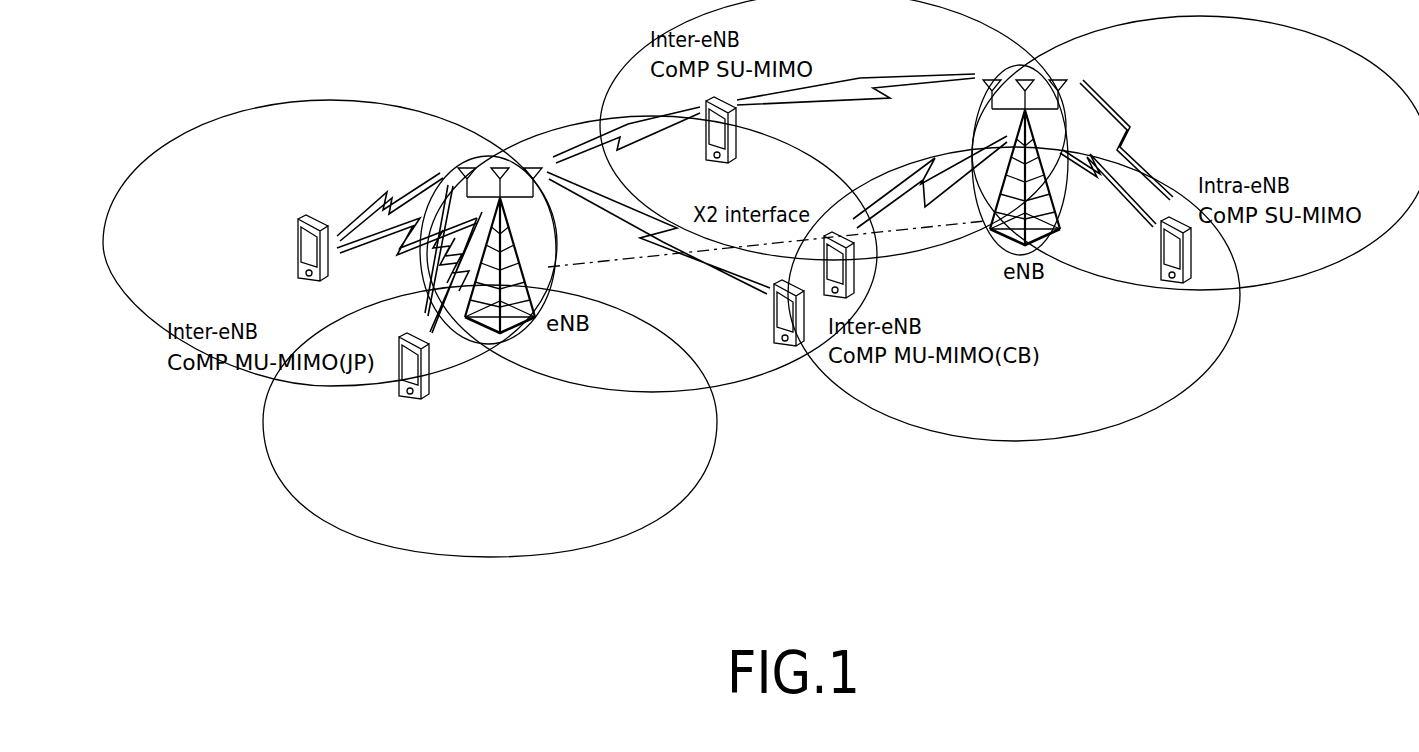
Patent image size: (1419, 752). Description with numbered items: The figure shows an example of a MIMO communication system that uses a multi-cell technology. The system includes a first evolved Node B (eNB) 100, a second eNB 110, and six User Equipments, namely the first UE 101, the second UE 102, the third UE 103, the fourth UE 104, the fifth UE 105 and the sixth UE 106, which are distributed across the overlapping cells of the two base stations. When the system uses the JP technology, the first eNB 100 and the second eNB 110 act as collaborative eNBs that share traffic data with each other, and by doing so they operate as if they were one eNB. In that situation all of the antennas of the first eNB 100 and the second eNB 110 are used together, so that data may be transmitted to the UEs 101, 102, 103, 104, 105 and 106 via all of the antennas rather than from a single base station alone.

The first evolved Node B (eNB) 100 is at (522, 335).
The second eNB 110 is at (1056, 232).
The first User Equipment (UE) 101 is at (313, 215).
The second User Equipment (UE) 102 is at (423, 398).
The third User Equipment (UE) 103 is at (740, 120).
The fourth User Equipment (UE) 104 is at (860, 265).
The fifth User Equipment (UE) 105 is at (773, 310).
The sixth User Equipment (UE) 106 is at (1160, 249).